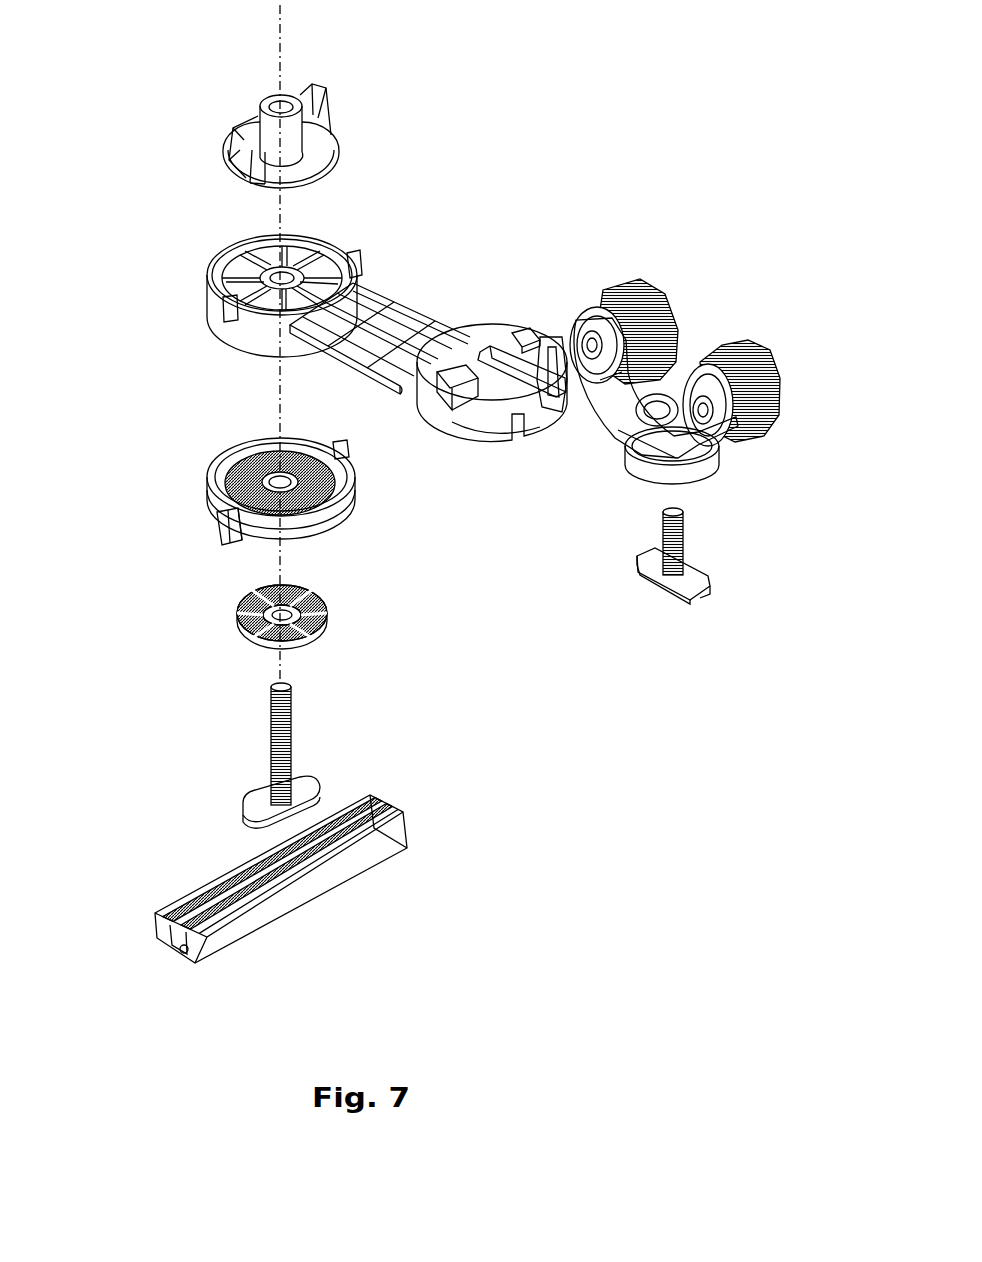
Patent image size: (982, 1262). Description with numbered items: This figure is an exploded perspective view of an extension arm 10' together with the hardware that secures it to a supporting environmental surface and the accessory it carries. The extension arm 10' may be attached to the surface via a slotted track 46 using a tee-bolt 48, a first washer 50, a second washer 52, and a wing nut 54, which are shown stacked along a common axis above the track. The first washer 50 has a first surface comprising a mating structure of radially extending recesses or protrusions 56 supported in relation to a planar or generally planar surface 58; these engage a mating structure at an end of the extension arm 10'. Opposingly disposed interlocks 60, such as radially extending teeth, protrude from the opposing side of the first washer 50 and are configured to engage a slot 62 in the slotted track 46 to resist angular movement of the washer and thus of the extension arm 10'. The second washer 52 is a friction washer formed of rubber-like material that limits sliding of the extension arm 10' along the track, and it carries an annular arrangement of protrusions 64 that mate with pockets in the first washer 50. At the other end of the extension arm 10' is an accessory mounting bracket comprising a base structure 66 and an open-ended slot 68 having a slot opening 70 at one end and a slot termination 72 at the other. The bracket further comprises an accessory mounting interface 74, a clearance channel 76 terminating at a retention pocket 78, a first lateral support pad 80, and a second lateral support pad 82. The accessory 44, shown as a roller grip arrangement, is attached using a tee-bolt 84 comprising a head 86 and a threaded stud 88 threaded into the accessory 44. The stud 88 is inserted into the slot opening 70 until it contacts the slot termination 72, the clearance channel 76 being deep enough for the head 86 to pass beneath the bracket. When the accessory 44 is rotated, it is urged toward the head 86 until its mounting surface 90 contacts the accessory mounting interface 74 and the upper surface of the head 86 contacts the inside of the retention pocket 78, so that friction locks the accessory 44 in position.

The extension arm 10' is at (517, 369).
The accessory 44 is at (697, 394).
The slotted track 46 is at (319, 886).
The tee-bolt 48 is at (335, 722).
The first washer 50 is at (232, 507).
The second washer 52 is at (233, 640).
The wing nut 54 is at (332, 72).
The radially extending recesses or protrusions 56 is at (243, 455).
The planar surface 58 is at (272, 476).
The interlocks 60 is at (337, 450).
The slot 62 is at (160, 955).
The protrusions 64 is at (318, 602).
The base structure 66 is at (411, 366).
The open-ended slot 68 is at (493, 352).
The slot opening 70 is at (637, 282).
The slot termination 72 is at (483, 325).
The accessory mounting interface 74 is at (493, 400).
The clearance channel 76 is at (548, 422).
The retention pocket 78 is at (566, 316).
The first lateral support pad 80 is at (562, 400).
The second lateral support pad 82 is at (472, 428).
The tee-bolt 84 is at (735, 549).
The head 86 is at (705, 586).
The threaded stud 88 is at (685, 535).
The mounting surface 90 is at (655, 488).